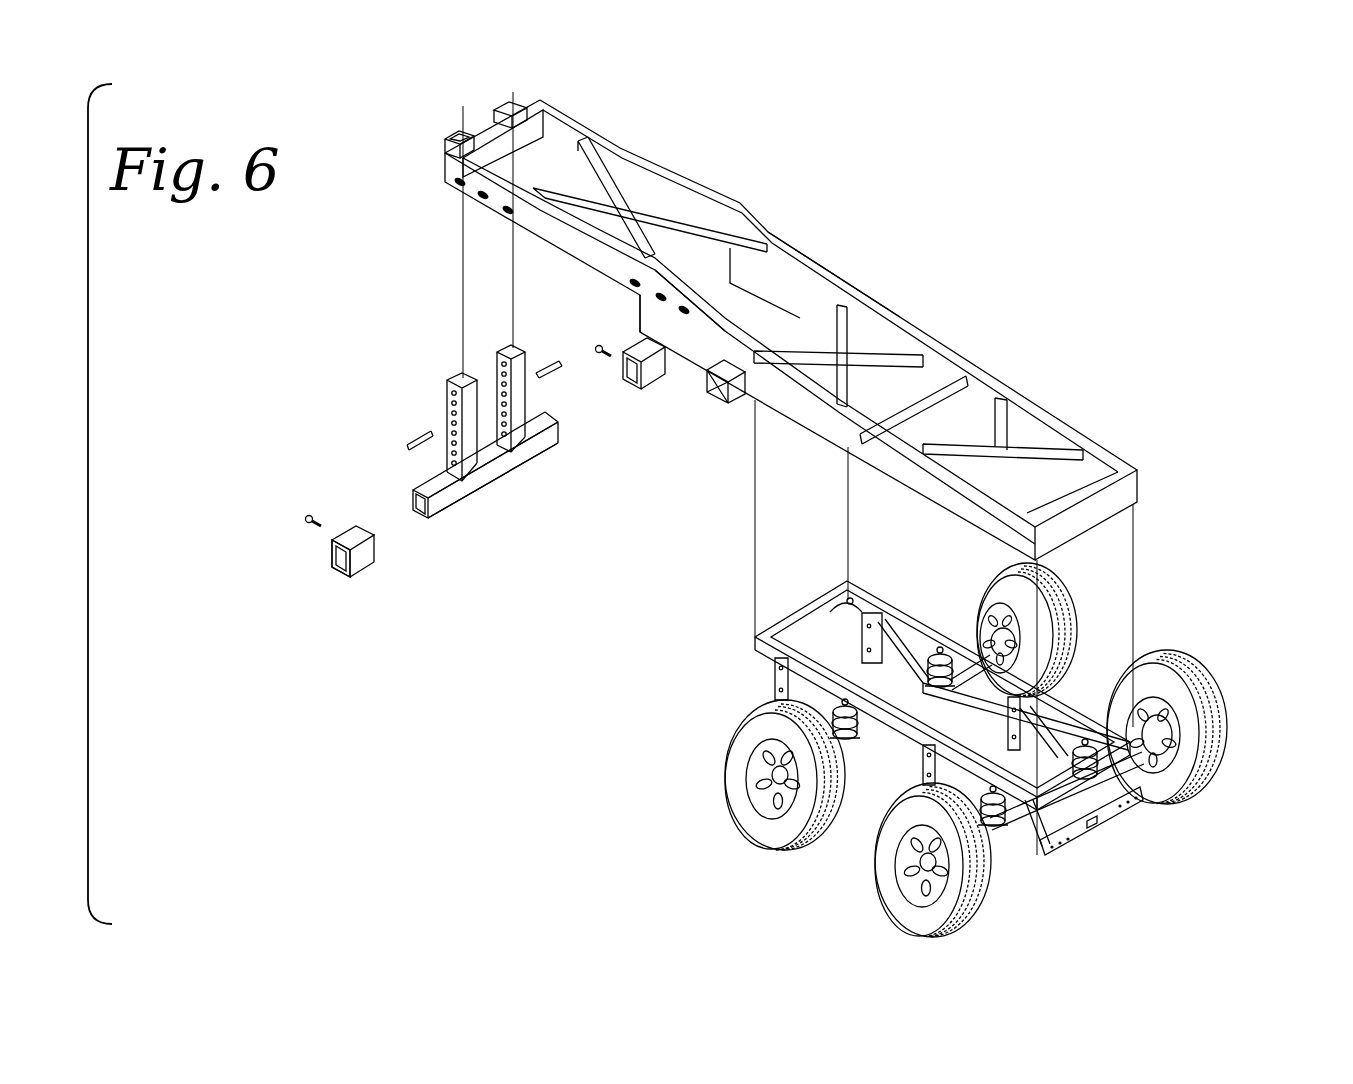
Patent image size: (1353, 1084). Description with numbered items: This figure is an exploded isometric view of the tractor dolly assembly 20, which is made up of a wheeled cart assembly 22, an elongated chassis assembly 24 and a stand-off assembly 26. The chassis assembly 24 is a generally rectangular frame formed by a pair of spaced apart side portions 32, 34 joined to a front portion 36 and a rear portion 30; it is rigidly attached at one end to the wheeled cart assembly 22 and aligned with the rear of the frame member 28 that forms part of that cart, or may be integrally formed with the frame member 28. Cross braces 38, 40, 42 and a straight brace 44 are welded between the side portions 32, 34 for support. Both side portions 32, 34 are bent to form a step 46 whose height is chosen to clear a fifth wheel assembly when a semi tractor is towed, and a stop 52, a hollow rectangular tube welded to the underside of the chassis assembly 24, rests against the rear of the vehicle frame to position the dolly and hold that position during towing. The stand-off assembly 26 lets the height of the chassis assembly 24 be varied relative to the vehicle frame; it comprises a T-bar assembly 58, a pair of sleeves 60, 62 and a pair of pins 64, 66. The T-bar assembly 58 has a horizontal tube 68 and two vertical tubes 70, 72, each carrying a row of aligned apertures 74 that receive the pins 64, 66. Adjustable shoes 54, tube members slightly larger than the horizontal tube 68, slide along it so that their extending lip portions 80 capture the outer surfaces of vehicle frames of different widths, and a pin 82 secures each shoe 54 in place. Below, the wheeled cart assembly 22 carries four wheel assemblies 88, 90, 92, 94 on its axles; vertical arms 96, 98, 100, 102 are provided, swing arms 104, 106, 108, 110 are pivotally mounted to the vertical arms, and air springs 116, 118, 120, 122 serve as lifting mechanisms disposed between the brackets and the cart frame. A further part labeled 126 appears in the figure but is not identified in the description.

The tractor dolly assembly 20 is at (829, 454).
The wheeled cart assembly 22 is at (945, 747).
The chassis assembly 24 is at (815, 268).
The stand-off assembly 26 is at (440, 453).
The frame member 28 is at (752, 650).
The rear portion 30 is at (1110, 520).
The side portion 32 is at (807, 427).
The side portion 34 is at (900, 316).
The front portion 36 is at (540, 100).
The cross brace 38 is at (1002, 392).
The cross brace 40 is at (823, 322).
The cross brace 42 is at (633, 197).
The straight brace 44 is at (975, 427).
The step 46 is at (636, 311).
The stop 52 is at (718, 412).
The adjustable shoe 54 is at (367, 568).
The T-bar assembly 58 is at (507, 482).
The sleeve 60 is at (445, 137).
The sleeve 62 is at (497, 101).
The pin 64 is at (557, 367).
The pin 66 is at (420, 440).
The horizontal tube 68 is at (442, 517).
The vertical tube 70 is at (415, 411).
The vertical tube 72 is at (509, 348).
The apertures 74 is at (443, 460).
The extending lip portion 80 is at (338, 572).
The pin 82 is at (306, 521).
The wheel assembly 88 is at (728, 823).
The wheel assembly 90 is at (1073, 598).
The wheel assembly 92 is at (888, 913).
The wheel assembly 94 is at (1240, 718).
The vertical arm 96 is at (772, 676).
The vertical arm 98 is at (862, 635).
The vertical arm 100 is at (921, 758).
The vertical arm 102 is at (1056, 757).
The swing arm 104 is at (845, 698).
The swing arm 106 is at (985, 786).
The swing arm 108 is at (905, 645).
The swing arm 110 is at (1122, 692).
The air spring 116 is at (845, 742).
The air spring 118 is at (1008, 832).
The air spring 120 is at (945, 648).
The air spring 122 is at (1088, 760).
The bumper plate 126 is at (1084, 840).